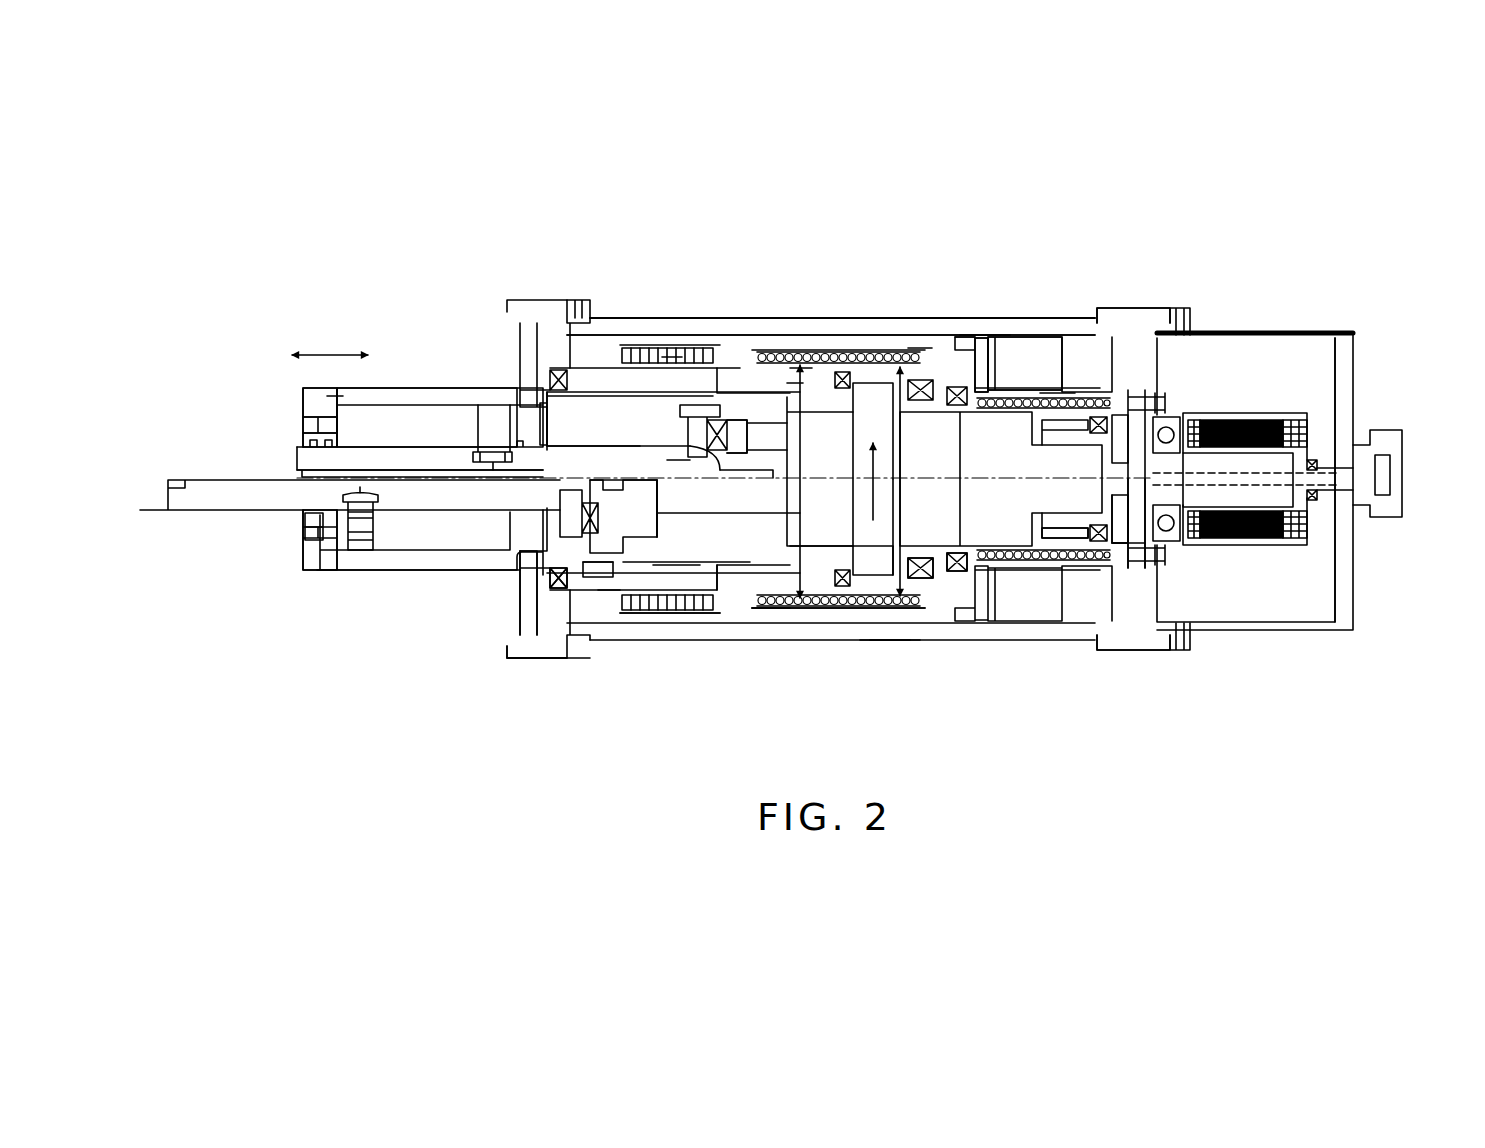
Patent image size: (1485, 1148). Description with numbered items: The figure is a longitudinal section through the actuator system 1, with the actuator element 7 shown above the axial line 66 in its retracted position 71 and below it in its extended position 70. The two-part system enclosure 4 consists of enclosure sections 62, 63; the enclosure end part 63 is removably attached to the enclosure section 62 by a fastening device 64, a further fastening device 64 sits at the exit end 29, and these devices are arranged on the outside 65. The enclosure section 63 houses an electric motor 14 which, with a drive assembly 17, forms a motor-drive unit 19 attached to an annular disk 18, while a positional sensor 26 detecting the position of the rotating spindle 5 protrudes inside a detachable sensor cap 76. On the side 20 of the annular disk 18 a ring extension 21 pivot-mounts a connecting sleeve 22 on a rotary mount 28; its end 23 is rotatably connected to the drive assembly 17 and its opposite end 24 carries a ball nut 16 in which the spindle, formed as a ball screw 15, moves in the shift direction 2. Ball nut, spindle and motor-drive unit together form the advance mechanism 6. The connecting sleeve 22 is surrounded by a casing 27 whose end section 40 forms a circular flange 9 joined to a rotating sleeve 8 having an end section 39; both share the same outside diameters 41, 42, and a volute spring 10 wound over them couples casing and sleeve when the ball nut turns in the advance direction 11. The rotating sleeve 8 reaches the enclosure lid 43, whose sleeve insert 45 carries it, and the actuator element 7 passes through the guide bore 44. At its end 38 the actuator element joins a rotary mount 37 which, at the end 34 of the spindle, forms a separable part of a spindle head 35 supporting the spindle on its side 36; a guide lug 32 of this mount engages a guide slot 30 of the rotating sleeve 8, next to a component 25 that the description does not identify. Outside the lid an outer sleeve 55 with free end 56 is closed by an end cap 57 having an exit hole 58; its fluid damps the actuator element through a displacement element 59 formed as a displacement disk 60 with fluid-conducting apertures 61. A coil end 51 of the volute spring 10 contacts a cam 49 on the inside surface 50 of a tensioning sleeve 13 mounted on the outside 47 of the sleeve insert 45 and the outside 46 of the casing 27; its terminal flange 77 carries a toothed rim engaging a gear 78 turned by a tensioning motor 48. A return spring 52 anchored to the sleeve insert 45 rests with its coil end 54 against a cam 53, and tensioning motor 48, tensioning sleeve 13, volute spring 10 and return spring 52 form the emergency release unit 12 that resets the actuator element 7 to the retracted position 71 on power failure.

The actuator system 1 is at (915, 213).
The shift direction 2 is at (345, 352).
The system enclosure 4 is at (982, 322).
The rotating spindle 5 is at (929, 485).
The advance mechanism 6 is at (1262, 362).
The actuator element 7 is at (350, 431).
The rotating sleeve 8 is at (733, 358).
The circular flange 9 is at (838, 410).
The volute spring 10 is at (797, 390).
The advance direction 11 is at (883, 645).
The emergency release unit 12 is at (661, 306).
The tensioning sleeve 13 is at (706, 345).
The electric motor 14 is at (1255, 497).
The ball screw 15 is at (1025, 407).
The ball nut 16 is at (823, 535).
The drive assembly 17 is at (1183, 580).
The annular disk 18 is at (1137, 613).
The motor-drive unit 19 is at (1231, 582).
The side of annular disk 20 is at (1103, 372).
The ring extension 21 is at (1075, 543).
The connecting sleeve 22 is at (1038, 540).
The end of connecting sleeve 23 is at (1163, 460).
The end of connecting sleeve 24 is at (903, 575).
The roller bearing 25 is at (1062, 390).
The positional sensor 26 is at (1397, 473).
The casing 27 is at (920, 345).
The rotary mount 28 is at (520, 565).
The exit end 29 is at (520, 623).
The guide slot 30 is at (670, 570).
The guide lug 32 is at (590, 577).
The end of rotating spindle 34 is at (688, 565).
The spindle head 35 is at (805, 368).
The side of spindle head 36 is at (610, 483).
The rotary mount 37 is at (510, 530).
The end of actuator element 38 is at (700, 467).
The end section 39 is at (754, 432).
The end section 40 is at (868, 348).
The outside diameter 41 is at (812, 450).
The outside diameter 42 is at (910, 450).
The enclosure lid 43 is at (400, 587).
The guide bore 44 is at (557, 445).
The sleeve insert 45 is at (645, 350).
The outside of casing 46 is at (940, 610).
The outside of sleeve insert 47 is at (637, 613).
The tensioning motor 48 is at (1022, 355).
The cam 49 is at (745, 612).
The inside surface 50 is at (787, 600).
The coil end 51 is at (763, 582).
The return spring 52 is at (672, 355).
The cam 53 is at (608, 598).
The coil end 54 is at (593, 320).
The outer sleeve 55 is at (403, 395).
The free end 56 is at (310, 397).
The end cap 57 is at (310, 420).
The exit hole 58 is at (303, 518).
The displacement element 59 is at (480, 398).
The displacement disk 60 is at (492, 413).
The fluid-conducting apertures 61 is at (375, 510).
The enclosure section 62 is at (929, 320).
The enclosure section 63 is at (1322, 328).
The fastening device 64 is at (538, 663).
The outside of system enclosure 65 is at (893, 650).
The axial line 66 is at (1345, 415).
The extended position 70 is at (225, 497).
The retracted position 71 is at (415, 453).
The sensor cap 76 is at (1397, 502).
The terminal flange 77 is at (968, 345).
The gear 78 is at (1000, 347).